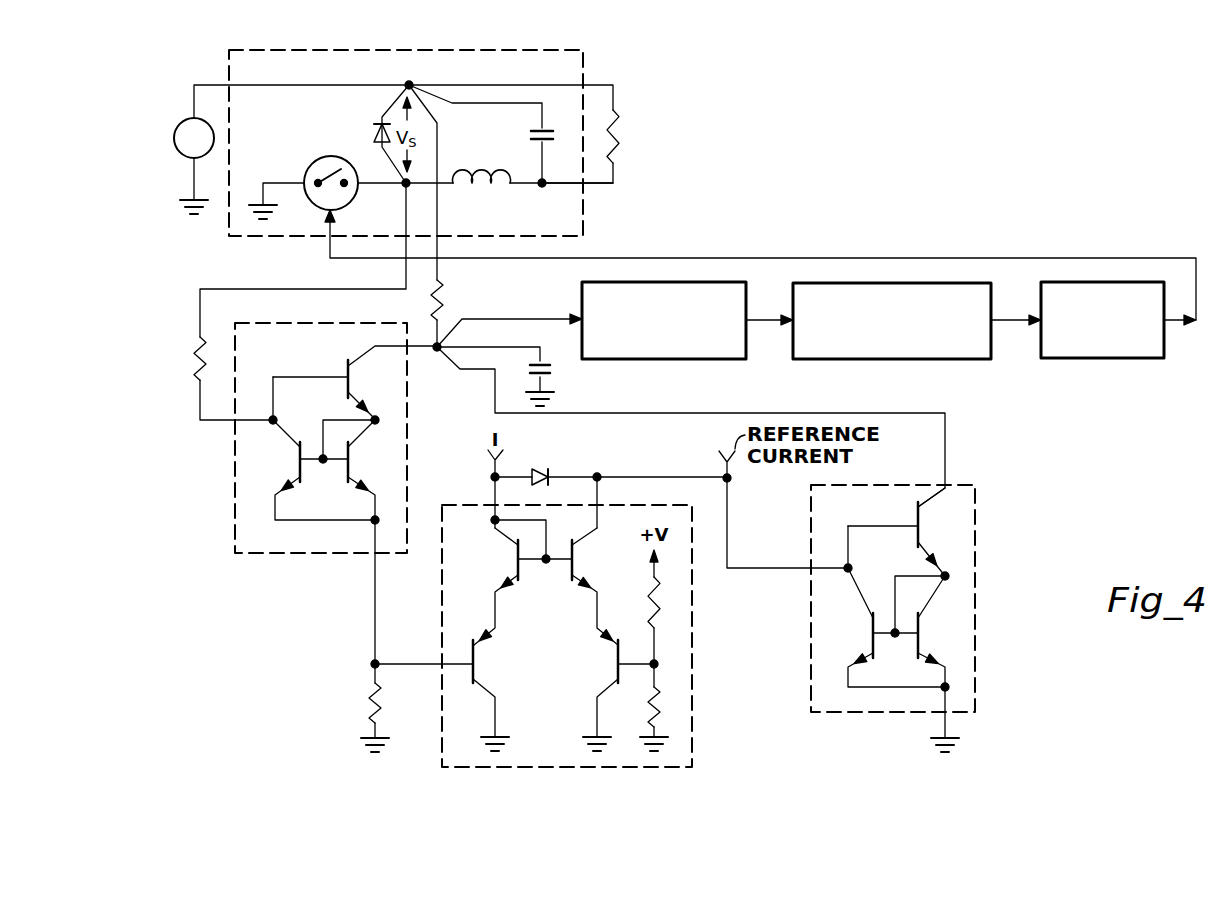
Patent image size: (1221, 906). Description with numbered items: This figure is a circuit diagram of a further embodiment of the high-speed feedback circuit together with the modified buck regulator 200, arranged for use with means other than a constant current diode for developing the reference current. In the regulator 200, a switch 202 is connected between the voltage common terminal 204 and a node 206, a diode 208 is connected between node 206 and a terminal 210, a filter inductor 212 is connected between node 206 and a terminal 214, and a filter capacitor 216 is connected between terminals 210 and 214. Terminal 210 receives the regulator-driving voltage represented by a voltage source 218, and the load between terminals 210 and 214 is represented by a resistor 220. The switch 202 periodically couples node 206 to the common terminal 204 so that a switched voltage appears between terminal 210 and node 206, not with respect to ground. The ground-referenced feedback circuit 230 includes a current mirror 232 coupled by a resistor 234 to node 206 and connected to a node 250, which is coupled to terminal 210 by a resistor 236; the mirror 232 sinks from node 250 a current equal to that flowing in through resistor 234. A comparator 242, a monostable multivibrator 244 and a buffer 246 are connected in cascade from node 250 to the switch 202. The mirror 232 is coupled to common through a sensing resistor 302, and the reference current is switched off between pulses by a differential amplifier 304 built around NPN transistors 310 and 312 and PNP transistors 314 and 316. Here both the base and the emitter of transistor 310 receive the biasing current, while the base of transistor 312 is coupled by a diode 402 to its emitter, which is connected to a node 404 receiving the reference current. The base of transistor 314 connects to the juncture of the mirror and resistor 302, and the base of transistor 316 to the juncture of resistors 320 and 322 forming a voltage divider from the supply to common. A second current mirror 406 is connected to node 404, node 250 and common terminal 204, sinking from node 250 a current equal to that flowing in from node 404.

The modified buck regulator 200 is at (500, 48).
The switch 202 is at (312, 164).
The voltage common terminal 204 is at (191, 184).
The node 206 is at (402, 185).
The diode 208 is at (371, 125).
The terminal 210 is at (407, 83).
The filter inductor 212 is at (493, 200).
The terminal 214 is at (542, 185).
The filter capacitor 216 is at (531, 137).
The voltage source 218 is at (176, 131).
The resistor 220 is at (621, 138).
The high-speed feedback circuit 230 is at (320, 564).
The current mirror 232 is at (315, 323).
The resistor 234 is at (196, 360).
The resistor 236 is at (440, 303).
The comparator 242 is at (673, 359).
The monostable multivibrator 244 is at (923, 359).
The buffer 246 is at (1103, 358).
The node 250 is at (437, 355).
The sensing resistor 302 is at (371, 710).
The differential amplifier 304 is at (692, 697).
The transistor 310 is at (513, 559).
The transistor 312 is at (570, 577).
The transistor 314 is at (475, 664).
The transistor 316 is at (616, 664).
The resistor 320 is at (653, 612).
The resistor 322 is at (653, 690).
The diode 402 is at (539, 467).
The node 404 is at (726, 471).
The current mirror 406 is at (975, 562).